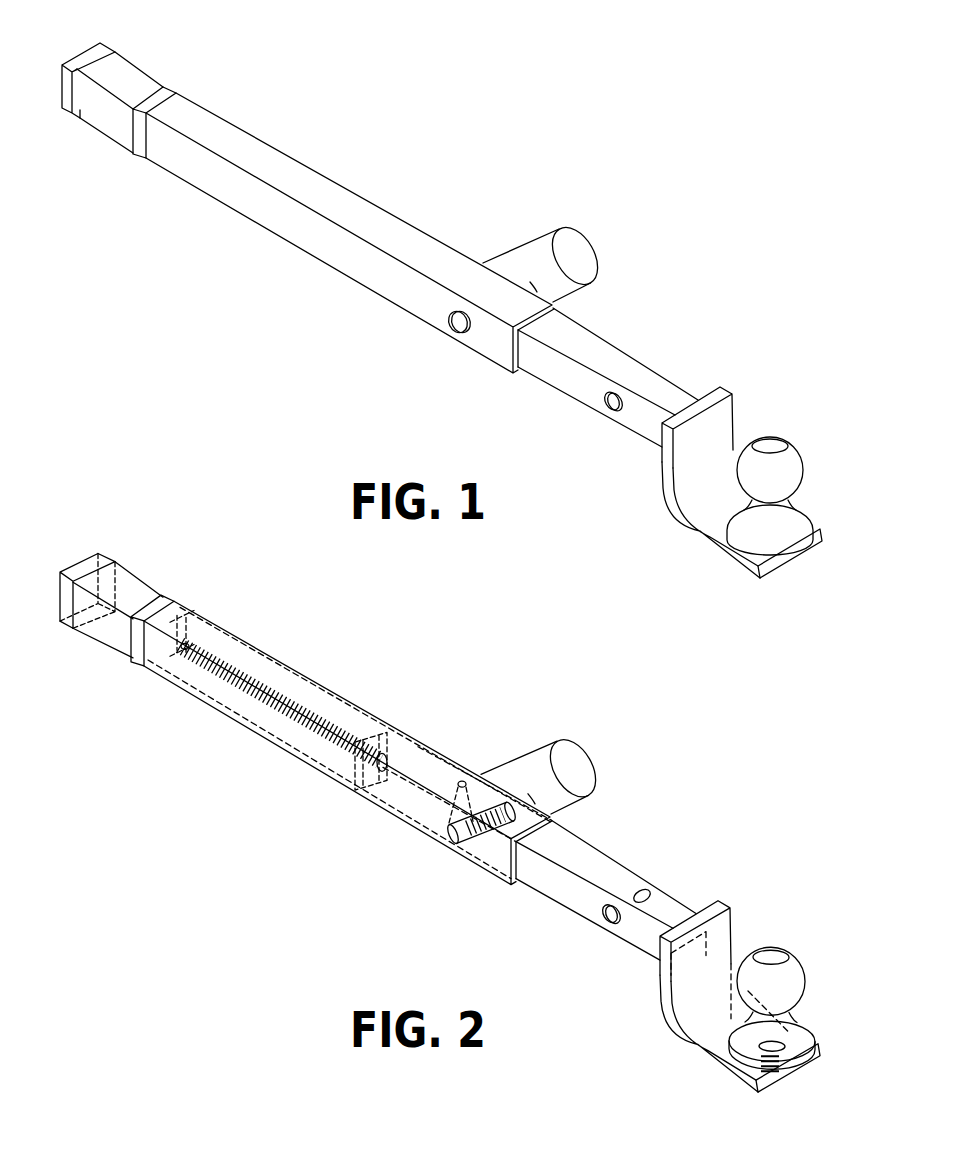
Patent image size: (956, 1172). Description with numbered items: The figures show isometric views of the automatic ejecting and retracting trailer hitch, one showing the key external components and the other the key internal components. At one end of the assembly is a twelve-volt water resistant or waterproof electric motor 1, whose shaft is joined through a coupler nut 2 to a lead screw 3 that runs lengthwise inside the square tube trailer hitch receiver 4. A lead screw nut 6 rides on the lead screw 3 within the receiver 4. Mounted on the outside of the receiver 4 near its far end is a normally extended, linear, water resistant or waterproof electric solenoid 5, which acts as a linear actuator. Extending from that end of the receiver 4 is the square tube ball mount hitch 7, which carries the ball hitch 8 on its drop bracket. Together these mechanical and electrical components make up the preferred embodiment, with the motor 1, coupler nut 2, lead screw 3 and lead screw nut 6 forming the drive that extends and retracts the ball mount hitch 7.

In FIG. 1, the electric motor 1 is at (125, 80).
In FIG. 2, the electric motor 1 is at (111, 605).
In FIG. 2, the coupler nut 2 is at (224, 612).
In FIG. 2, the lead screw 3 is at (282, 695).
In FIG. 1, the square tube trailer hitch receiver 4 is at (338, 207).
In FIG. 2, the square tube trailer hitch receiver 4 is at (341, 740).
In FIG. 1, the electric solenoid 5 is at (552, 268).
In FIG. 2, the electric solenoid 5 is at (543, 773).
In FIG. 2, the lead screw nut 6 is at (409, 722).
In FIG. 1, the square tube ball mount hitch 7 is at (636, 382).
In FIG. 2, the square tube ball mount hitch 7 is at (544, 860).
In FIG. 1, the ball hitch 8 is at (768, 440).
In FIG. 2, the ball hitch 8 is at (740, 996).